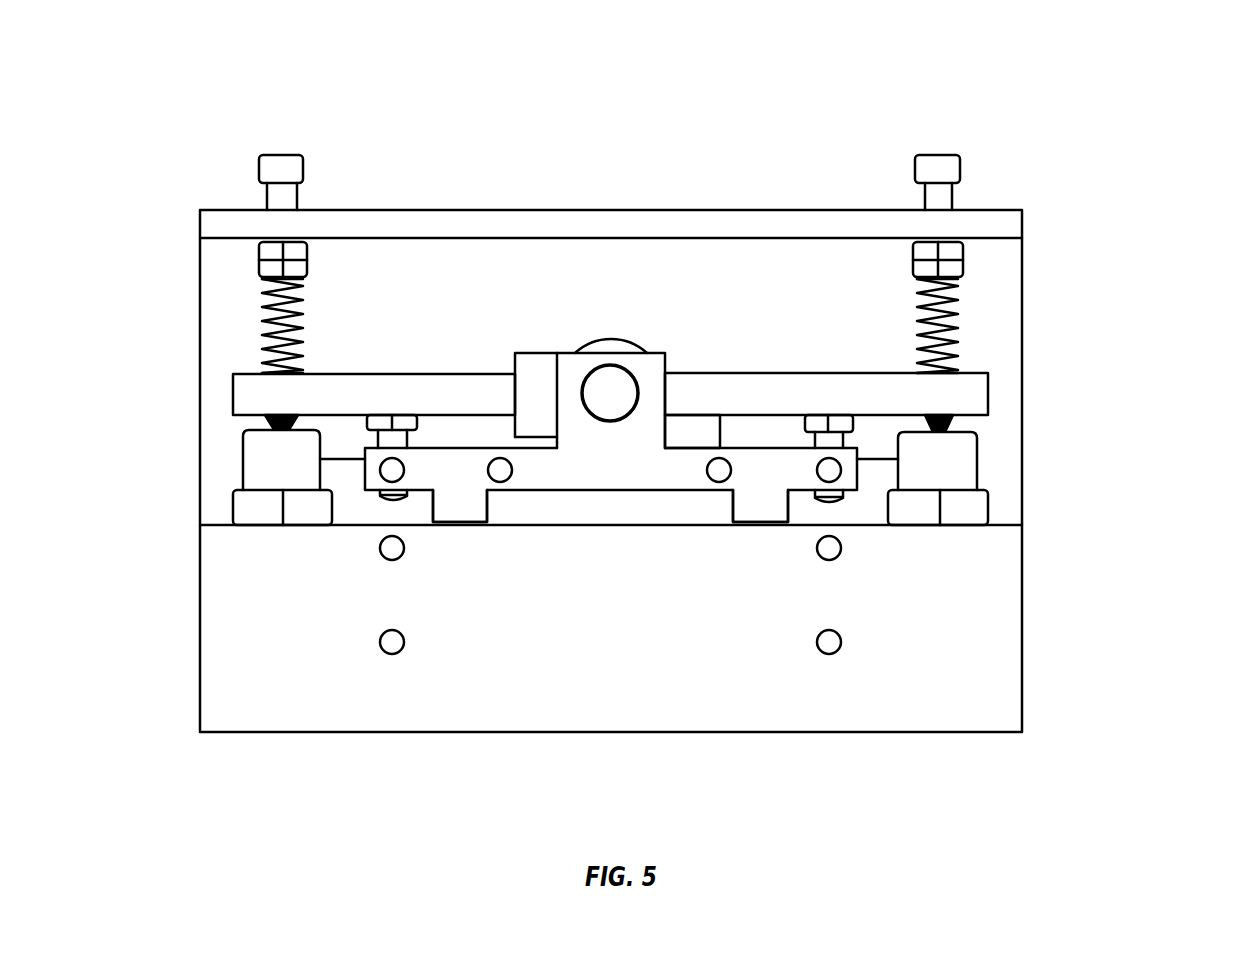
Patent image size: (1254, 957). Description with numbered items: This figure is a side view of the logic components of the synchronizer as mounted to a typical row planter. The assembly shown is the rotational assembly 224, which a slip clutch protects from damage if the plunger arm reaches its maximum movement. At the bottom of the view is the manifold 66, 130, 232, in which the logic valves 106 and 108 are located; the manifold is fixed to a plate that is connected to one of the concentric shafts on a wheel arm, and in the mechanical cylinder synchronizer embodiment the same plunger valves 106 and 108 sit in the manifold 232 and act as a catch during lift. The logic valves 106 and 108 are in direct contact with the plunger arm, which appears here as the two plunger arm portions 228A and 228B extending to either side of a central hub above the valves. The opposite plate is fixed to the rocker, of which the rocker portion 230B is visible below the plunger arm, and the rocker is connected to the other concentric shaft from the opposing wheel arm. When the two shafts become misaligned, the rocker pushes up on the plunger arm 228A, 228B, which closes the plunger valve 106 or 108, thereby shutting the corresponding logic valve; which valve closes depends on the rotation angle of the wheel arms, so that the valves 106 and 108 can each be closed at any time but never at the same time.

The rotational assembly 224 is at (657, 158).
The plunger arm 228A is at (468, 385).
The plunger arm 228B is at (752, 385).
The rocker 230B is at (467, 502).
The logic valve 106 is at (277, 462).
The logic valve 108 is at (945, 462).
The manifold 66 is at (711, 628).
The base plate 130 is at (711, 628).
The manifold 232 is at (1022, 665).